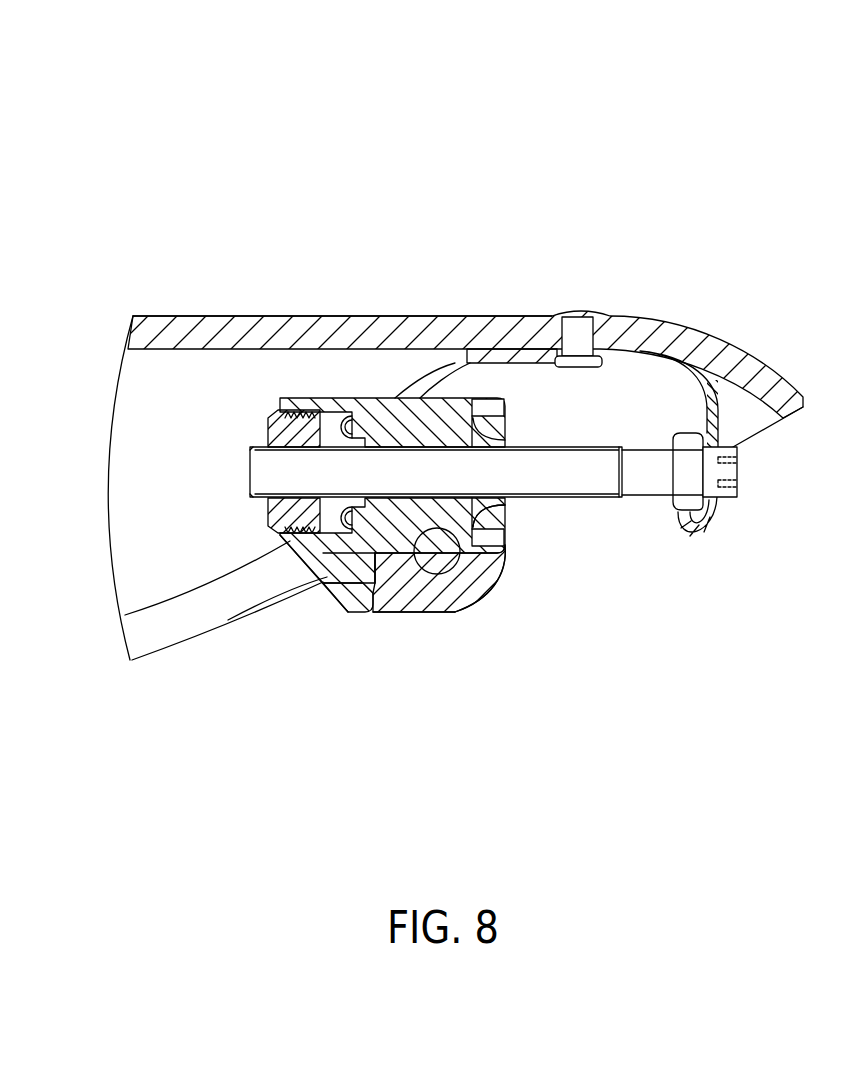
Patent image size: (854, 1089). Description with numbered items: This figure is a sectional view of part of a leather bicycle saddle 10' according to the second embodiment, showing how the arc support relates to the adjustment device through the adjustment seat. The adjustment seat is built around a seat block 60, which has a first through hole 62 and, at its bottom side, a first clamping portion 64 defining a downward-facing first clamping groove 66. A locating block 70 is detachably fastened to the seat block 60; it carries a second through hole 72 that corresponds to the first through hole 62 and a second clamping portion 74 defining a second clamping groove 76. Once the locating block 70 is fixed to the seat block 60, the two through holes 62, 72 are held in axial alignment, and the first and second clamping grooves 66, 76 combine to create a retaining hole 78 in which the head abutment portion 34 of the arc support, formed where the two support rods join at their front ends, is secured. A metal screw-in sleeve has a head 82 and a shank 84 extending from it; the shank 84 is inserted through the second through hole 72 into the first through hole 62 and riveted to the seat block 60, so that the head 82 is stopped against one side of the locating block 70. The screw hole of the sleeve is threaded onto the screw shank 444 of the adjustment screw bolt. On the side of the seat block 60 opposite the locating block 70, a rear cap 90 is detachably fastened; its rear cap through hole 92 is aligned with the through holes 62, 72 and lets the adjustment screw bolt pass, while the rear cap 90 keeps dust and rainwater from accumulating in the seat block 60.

The leather bicycle saddle 10' is at (416, 172).
The head abutment portion 34 is at (437, 552).
The seat block 60 is at (345, 390).
The first through hole 62 is at (398, 445).
The first clamping portion 64 is at (335, 595).
The first clamping groove 66 is at (488, 528).
The locating block 70 is at (489, 602).
The second through hole 72 is at (460, 349).
The second clamping portion 74 is at (448, 588).
The second clamping groove 76 is at (430, 575).
The retaining hole 78 is at (412, 555).
The head 82 is at (593, 478).
The shank 84 is at (385, 568).
The rear cap 90 is at (258, 413).
The rear cap through hole 92 is at (262, 518).
The screw shank 444 is at (679, 512).